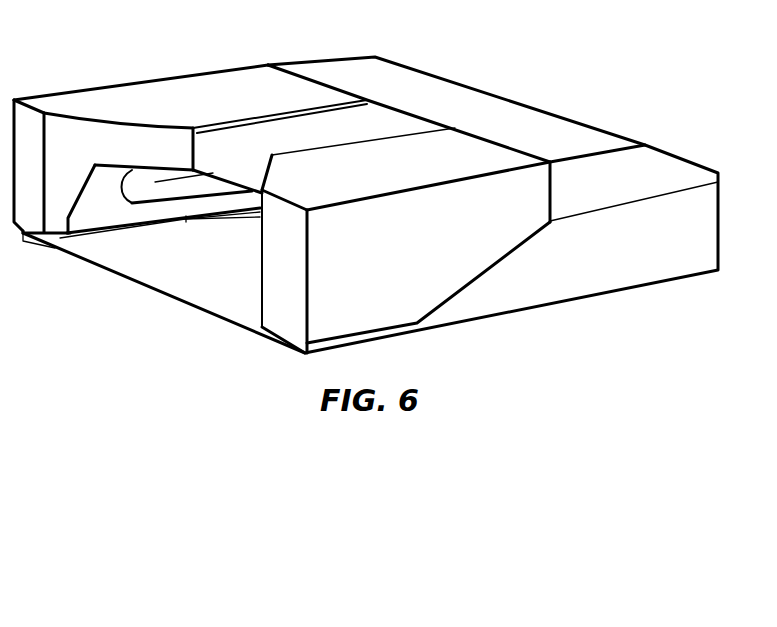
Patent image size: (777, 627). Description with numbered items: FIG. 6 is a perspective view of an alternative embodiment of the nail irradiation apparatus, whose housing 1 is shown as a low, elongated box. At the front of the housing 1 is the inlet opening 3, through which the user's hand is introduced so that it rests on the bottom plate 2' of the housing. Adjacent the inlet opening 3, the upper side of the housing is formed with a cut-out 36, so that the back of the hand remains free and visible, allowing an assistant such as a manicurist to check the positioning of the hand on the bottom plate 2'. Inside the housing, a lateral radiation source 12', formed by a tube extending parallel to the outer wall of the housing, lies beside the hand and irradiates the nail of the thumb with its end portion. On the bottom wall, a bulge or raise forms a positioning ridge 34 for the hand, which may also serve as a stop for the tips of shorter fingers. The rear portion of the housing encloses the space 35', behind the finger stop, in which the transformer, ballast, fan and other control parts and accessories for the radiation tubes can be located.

The housing 1 is at (312, 63).
The bottom plate 2' is at (364, 247).
The inlet opening 3 is at (96, 275).
The radiation source 12' is at (171, 120).
The positioning ridge 34 is at (212, 222).
The space behind the stop 35' is at (493, 129).
The cut-out 36 is at (163, 146).